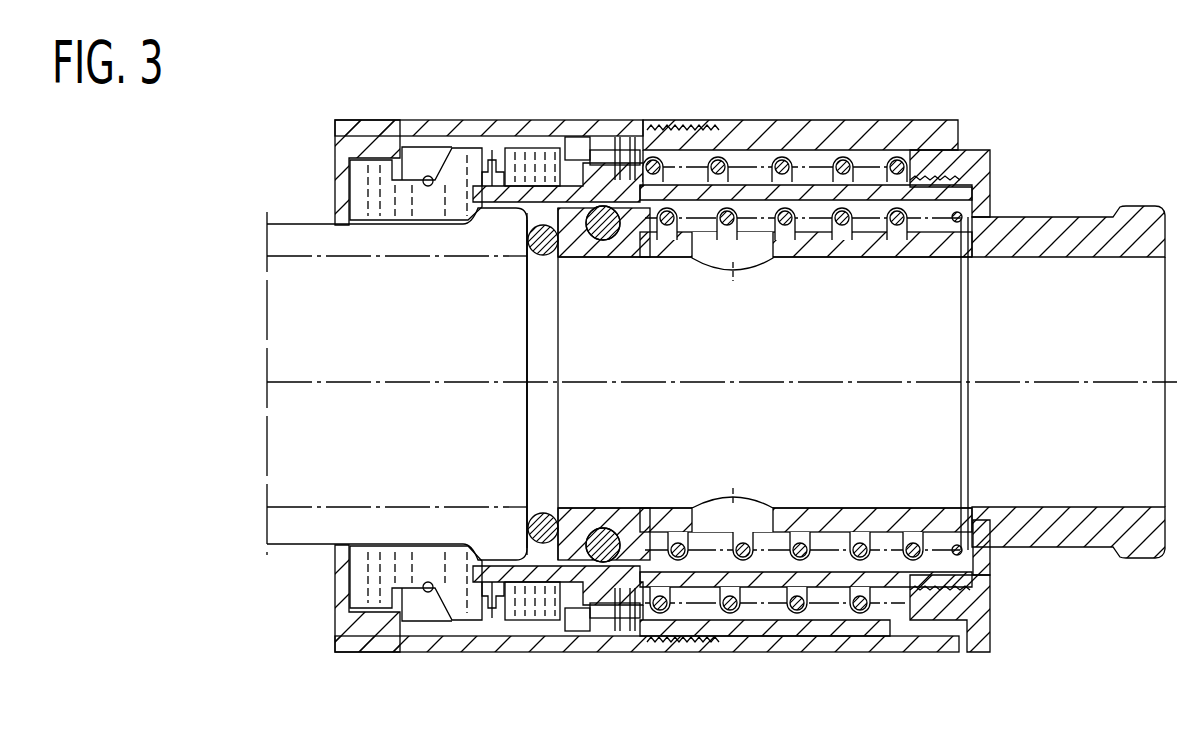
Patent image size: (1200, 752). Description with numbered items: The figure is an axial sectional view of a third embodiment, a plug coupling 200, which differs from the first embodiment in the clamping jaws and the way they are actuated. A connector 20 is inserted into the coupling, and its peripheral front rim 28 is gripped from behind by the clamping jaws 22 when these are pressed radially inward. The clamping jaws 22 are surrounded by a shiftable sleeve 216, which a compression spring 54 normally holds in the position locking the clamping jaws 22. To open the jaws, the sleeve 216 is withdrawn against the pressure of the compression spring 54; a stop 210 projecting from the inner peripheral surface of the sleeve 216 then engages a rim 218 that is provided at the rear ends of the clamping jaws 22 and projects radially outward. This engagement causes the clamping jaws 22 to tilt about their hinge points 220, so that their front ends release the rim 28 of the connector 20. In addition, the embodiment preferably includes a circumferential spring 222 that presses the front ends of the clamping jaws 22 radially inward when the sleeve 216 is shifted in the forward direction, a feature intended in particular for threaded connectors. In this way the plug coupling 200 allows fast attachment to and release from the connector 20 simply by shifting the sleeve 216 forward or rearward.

The plug coupling 200 is at (697, 378).
The sleeve 216 is at (368, 127).
The clamping jaws 22 is at (345, 192).
The hinge points 220 is at (492, 167).
The stop 210 is at (525, 137).
The rim 218 is at (583, 137).
The compression spring 54 is at (797, 163).
The circumferential spring 222 is at (428, 592).
The peripheral front rim 28 is at (498, 548).
The connector 20 is at (290, 532).